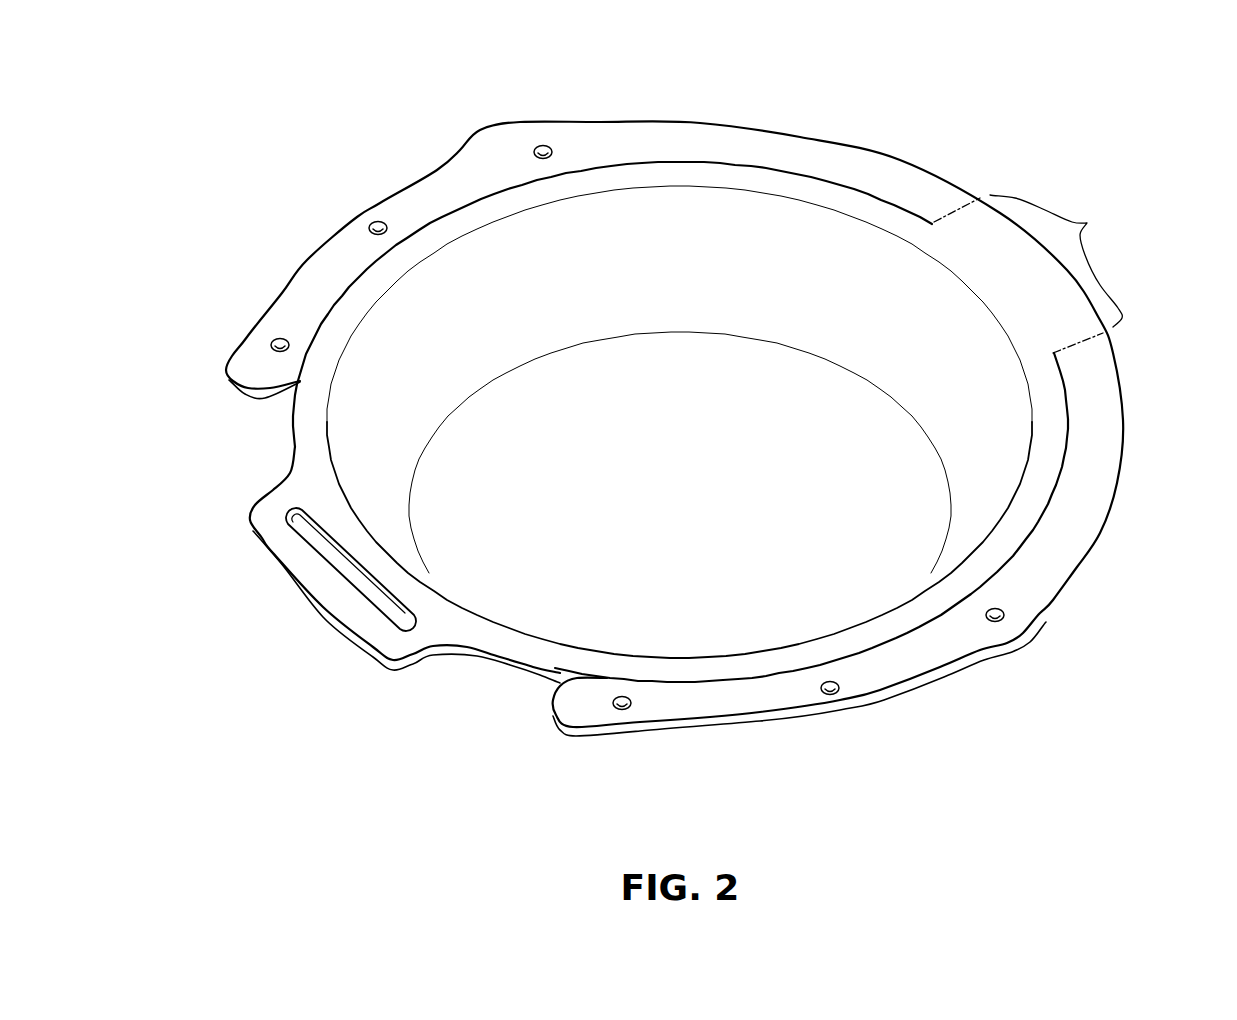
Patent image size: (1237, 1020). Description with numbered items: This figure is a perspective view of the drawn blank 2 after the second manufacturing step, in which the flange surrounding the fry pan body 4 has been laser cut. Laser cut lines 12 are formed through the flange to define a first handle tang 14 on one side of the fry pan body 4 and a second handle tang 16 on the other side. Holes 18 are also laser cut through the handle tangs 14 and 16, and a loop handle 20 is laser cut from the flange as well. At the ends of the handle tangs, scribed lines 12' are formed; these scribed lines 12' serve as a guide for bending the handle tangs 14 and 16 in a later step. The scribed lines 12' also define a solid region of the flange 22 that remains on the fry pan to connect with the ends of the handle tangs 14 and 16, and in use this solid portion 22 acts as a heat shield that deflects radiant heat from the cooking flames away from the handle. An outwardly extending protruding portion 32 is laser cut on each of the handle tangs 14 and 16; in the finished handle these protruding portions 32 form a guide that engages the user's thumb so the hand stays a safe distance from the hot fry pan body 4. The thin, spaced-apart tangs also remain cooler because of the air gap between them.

The drawn blank 2 is at (898, 160).
The fry pan body 4 is at (537, 645).
The laser cut lines 12 is at (480, 444).
The scribed lines 12' is at (1067, 237).
The first handle tang 14 is at (310, 287).
The second handle tang 16 is at (1077, 533).
The holes 18 is at (540, 147).
The loop handle 20 is at (297, 593).
The solid region of the flange 22 is at (1057, 261).
The outwardly extending protruding portion 32 is at (548, 124).